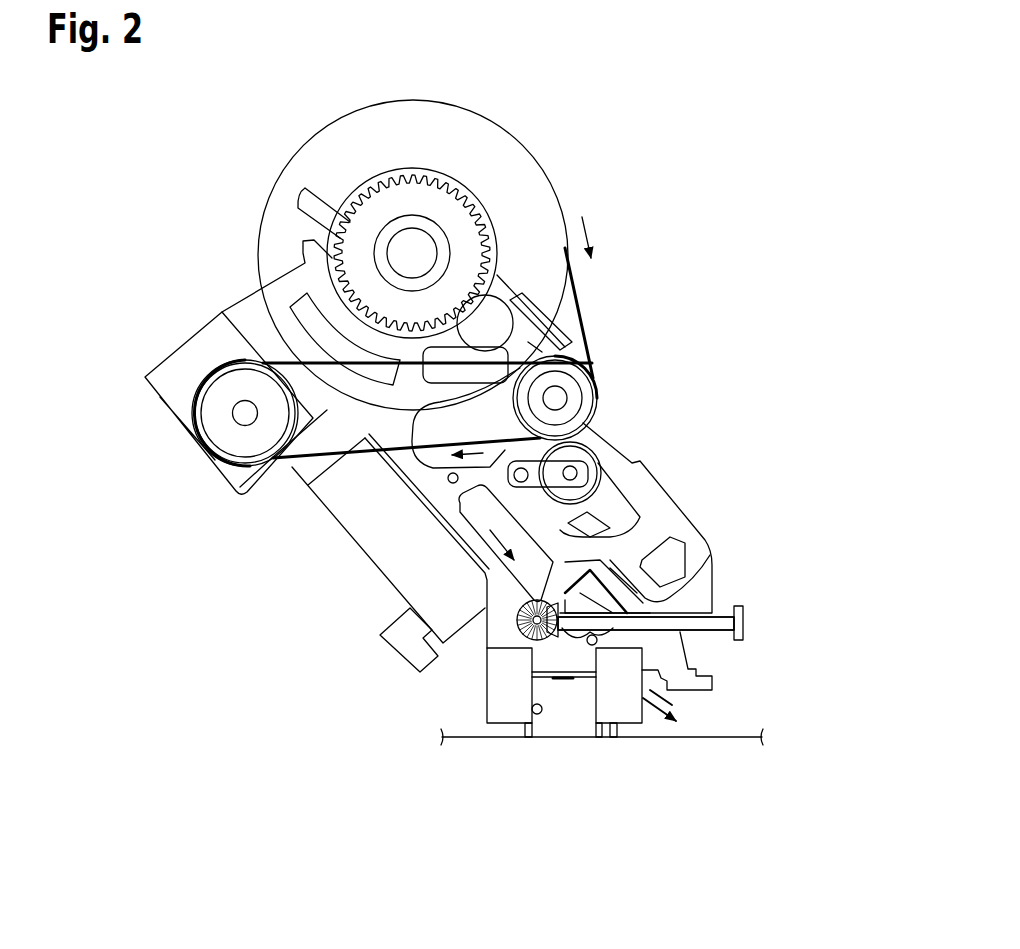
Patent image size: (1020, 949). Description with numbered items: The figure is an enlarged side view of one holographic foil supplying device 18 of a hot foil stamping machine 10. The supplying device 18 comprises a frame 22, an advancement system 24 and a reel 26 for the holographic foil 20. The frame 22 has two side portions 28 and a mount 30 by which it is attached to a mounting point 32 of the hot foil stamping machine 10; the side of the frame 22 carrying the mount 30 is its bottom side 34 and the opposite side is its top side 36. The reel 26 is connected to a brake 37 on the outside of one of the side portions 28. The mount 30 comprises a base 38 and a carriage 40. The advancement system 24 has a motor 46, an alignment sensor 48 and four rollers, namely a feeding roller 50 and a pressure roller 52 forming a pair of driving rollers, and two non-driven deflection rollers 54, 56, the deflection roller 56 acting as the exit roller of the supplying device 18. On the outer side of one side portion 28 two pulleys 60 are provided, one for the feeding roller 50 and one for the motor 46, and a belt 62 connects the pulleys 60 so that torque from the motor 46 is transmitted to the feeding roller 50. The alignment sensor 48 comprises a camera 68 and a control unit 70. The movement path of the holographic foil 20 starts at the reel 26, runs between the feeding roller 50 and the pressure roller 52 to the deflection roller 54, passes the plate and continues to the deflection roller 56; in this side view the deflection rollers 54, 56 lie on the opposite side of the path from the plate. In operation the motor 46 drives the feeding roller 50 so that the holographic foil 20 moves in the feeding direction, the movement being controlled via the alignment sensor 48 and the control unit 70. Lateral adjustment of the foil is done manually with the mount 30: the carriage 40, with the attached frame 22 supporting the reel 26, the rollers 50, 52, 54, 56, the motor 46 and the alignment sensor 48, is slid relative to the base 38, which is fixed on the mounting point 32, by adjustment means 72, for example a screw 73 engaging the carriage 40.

The hot foil stamping machine 10 is at (753, 735).
The holographic foil supplying device 18 is at (672, 88).
The holographic foil 20 is at (580, 303).
The frame 22 is at (258, 313).
The advancement system 24 is at (316, 603).
The reel 26 is at (490, 140).
The side portions 28 is at (323, 413).
The mount 30 is at (448, 692).
The mounting point 32 is at (502, 756).
The bottom side 34 is at (200, 587).
The top side 36 is at (706, 310).
The brake 37 is at (493, 318).
The base 38 is at (577, 715).
The carriage 40 is at (660, 665).
The motor 46 is at (382, 545).
The alignment sensor 48 is at (665, 548).
The feeding roller 50 is at (578, 400).
The pressure roller 52 is at (590, 445).
The deflection roller 54 is at (447, 472).
The deflection roller 56 is at (600, 645).
The pulleys 60 is at (578, 385).
The belt 62 is at (273, 360).
The camera 68 is at (607, 586).
The control unit 70 is at (650, 590).
The adjustment means 72 is at (745, 622).
The screw 73 is at (646, 623).